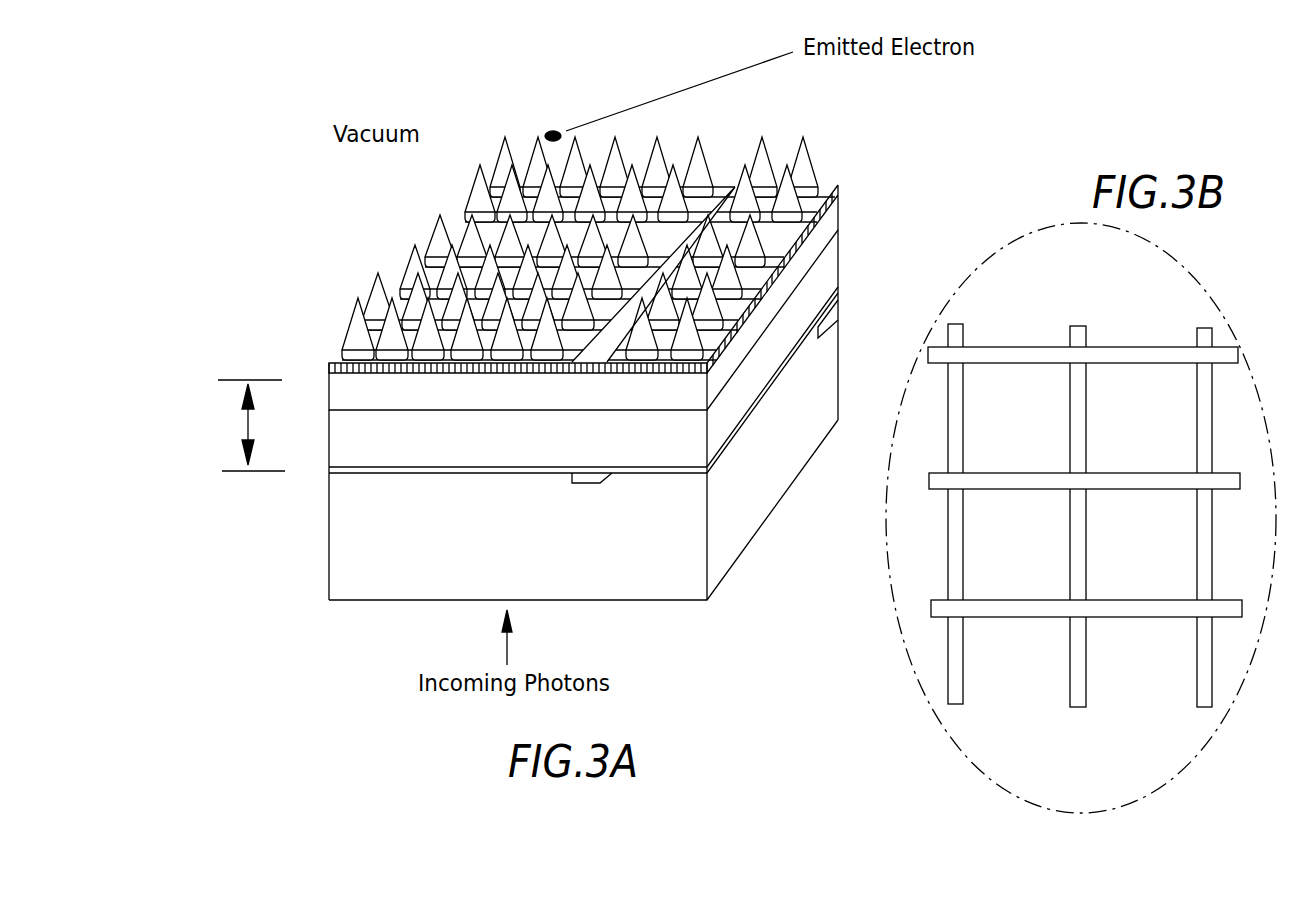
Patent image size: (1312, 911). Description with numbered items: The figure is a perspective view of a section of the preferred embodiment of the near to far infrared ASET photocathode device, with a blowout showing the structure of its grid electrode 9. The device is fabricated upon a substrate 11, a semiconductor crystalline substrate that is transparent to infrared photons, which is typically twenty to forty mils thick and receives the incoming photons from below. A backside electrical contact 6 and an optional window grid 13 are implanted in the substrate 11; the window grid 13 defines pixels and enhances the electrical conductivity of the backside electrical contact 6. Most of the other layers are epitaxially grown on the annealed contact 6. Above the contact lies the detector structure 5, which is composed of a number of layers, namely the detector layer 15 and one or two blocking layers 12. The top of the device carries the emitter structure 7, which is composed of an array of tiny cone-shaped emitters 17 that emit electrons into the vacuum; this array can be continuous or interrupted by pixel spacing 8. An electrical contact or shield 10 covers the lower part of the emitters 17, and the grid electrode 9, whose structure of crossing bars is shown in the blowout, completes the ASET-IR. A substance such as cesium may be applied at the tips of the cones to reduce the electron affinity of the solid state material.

In FIG. 3A, the detector structure 5 is at (232, 418).
In FIG. 3A, the backside electrical contact 6 is at (652, 472).
In FIG. 3A, the emitter structure 7 is at (447, 274).
In FIG. 3A, the pixel spacing 8 is at (840, 197).
In FIG. 3A, the grid electrode 9 is at (327, 367).
In FIG. 3B, the grid electrode 9 is at (1092, 277).
In FIG. 3A, the electrical contact or shield 10 is at (755, 278).
In FIG. 3A, the substrate 11 is at (685, 555).
In FIG. 3A, the blocking layer 12 is at (402, 383).
In FIG. 3A, the window grid 13 is at (572, 483).
In FIG. 3A, the detector layer 15 is at (687, 445).
In FIG. 3A, the cone-shaped emitters 17 is at (698, 163).